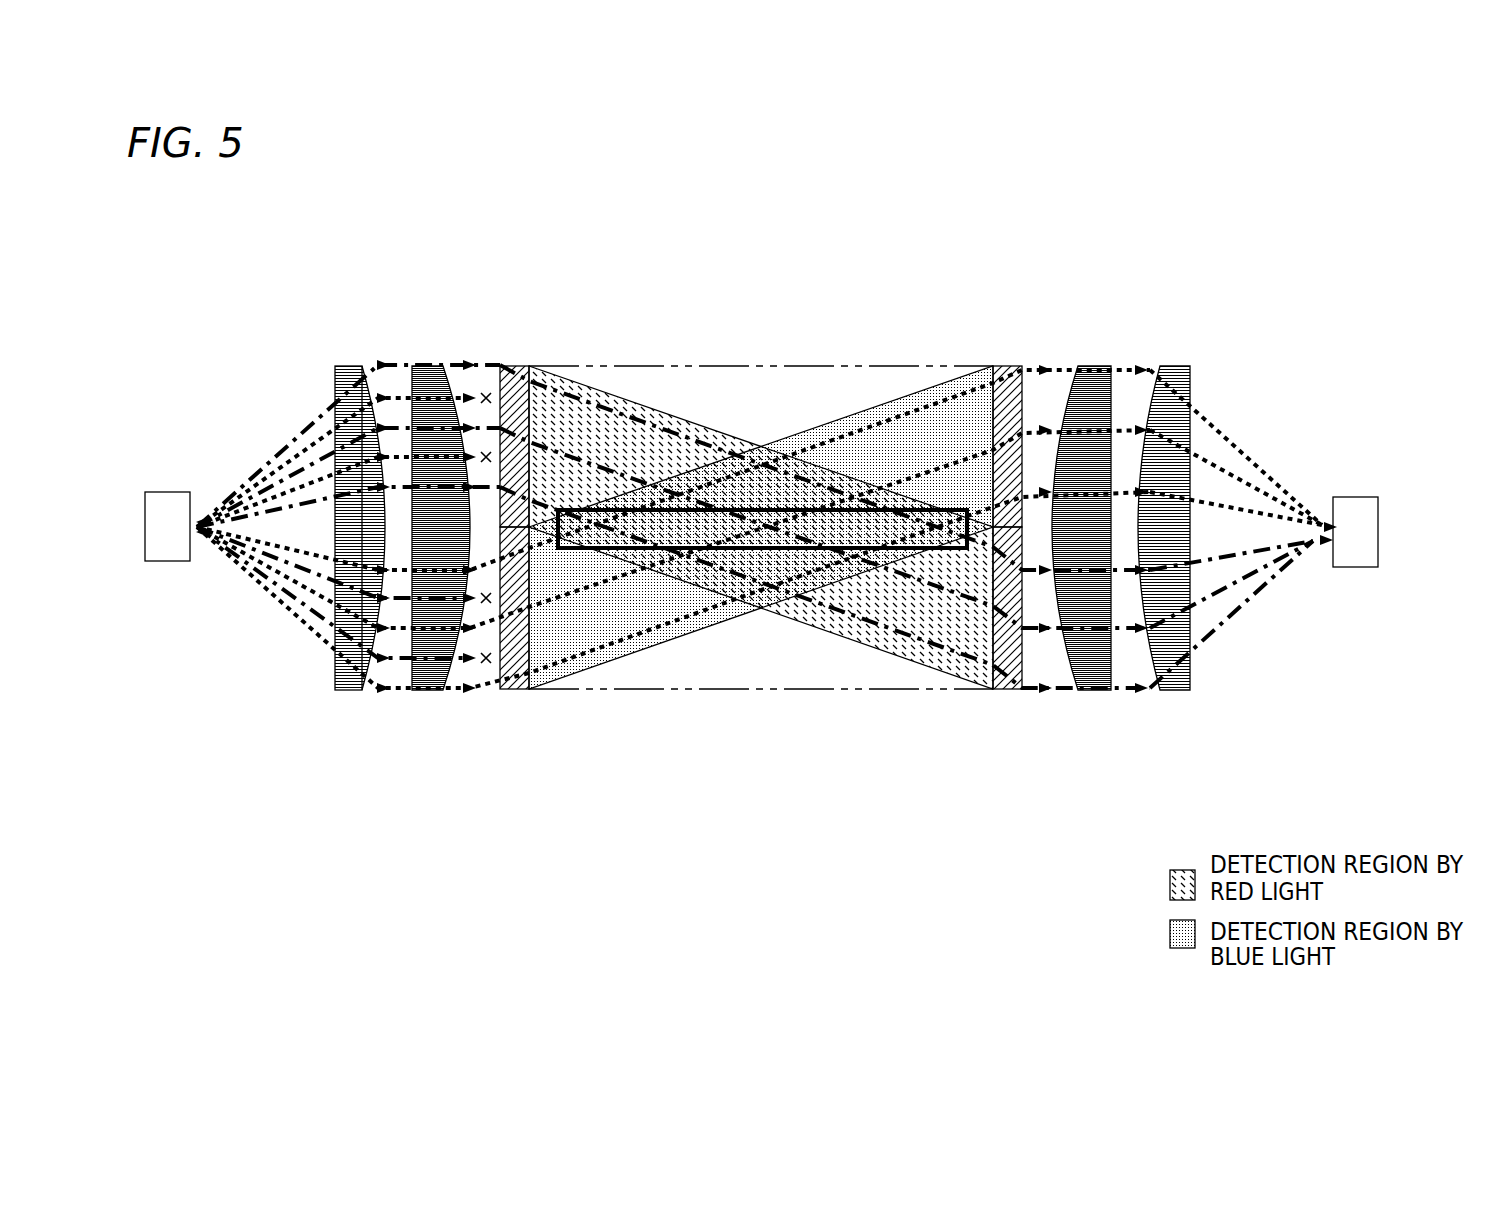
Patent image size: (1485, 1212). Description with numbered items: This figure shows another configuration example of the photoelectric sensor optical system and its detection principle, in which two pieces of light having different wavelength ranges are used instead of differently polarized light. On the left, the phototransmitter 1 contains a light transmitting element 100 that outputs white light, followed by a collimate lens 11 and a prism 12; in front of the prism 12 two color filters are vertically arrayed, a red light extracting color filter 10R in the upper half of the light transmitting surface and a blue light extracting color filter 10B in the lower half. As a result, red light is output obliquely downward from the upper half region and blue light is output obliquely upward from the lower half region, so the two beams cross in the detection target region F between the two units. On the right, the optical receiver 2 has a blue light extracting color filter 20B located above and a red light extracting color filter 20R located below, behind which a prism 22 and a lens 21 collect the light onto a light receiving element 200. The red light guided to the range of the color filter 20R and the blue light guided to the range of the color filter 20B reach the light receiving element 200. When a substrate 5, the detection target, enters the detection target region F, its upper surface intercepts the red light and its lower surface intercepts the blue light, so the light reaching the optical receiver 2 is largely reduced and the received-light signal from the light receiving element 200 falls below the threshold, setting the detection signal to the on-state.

The phototransmitter 1 is at (297, 297).
The optical receiver 2 is at (1244, 289).
The substrate 5 is at (778, 605).
The collimate lens 11 is at (348, 367).
The prism 12 is at (422, 367).
The lens 21 is at (1175, 367).
The prism 22 is at (1095, 367).
The light transmitting element 100 is at (168, 492).
The light receiving element 200 is at (1358, 497).
The red light extracting color filter 10R is at (515, 367).
The blue light extracting color filter 10B is at (515, 690).
The blue light extracting color filter 20B is at (1007, 367).
The red light extracting color filter 20R is at (1007, 690).
The detection target region F is at (847, 366).